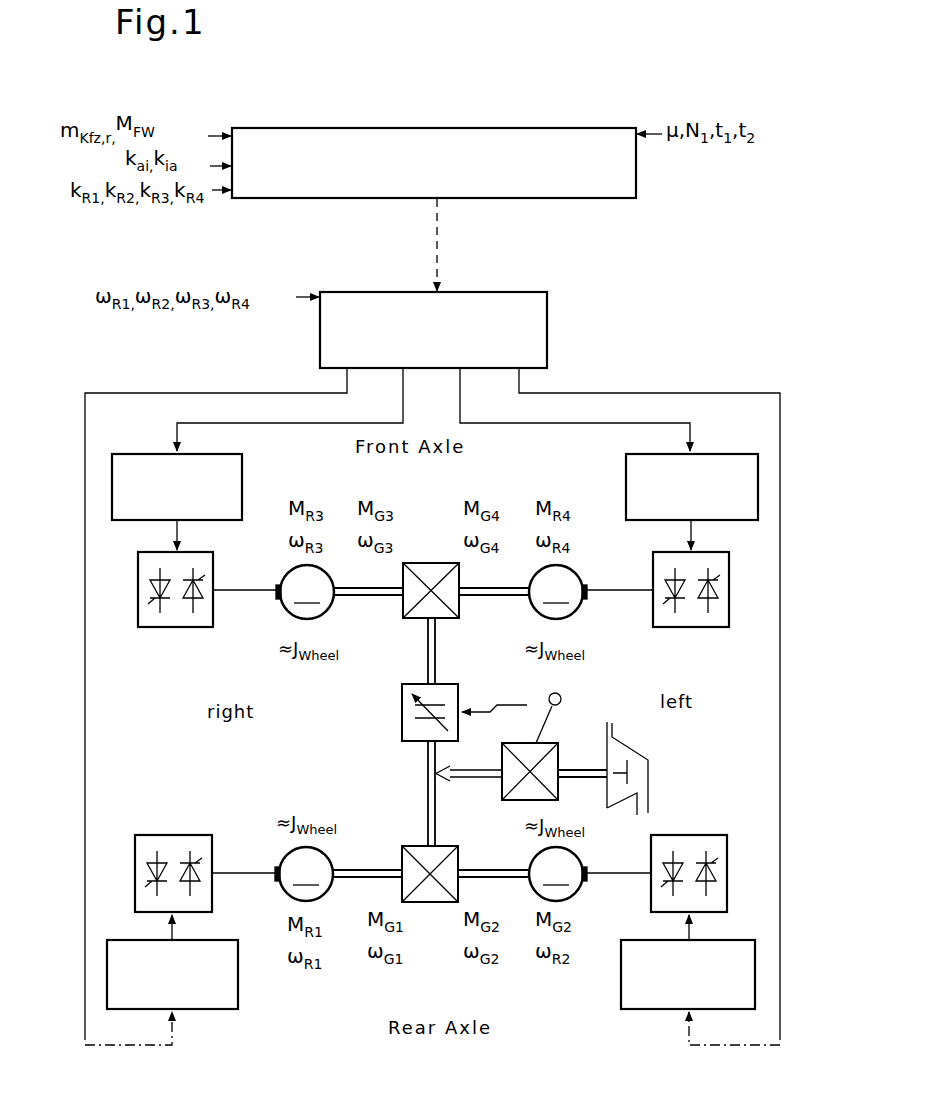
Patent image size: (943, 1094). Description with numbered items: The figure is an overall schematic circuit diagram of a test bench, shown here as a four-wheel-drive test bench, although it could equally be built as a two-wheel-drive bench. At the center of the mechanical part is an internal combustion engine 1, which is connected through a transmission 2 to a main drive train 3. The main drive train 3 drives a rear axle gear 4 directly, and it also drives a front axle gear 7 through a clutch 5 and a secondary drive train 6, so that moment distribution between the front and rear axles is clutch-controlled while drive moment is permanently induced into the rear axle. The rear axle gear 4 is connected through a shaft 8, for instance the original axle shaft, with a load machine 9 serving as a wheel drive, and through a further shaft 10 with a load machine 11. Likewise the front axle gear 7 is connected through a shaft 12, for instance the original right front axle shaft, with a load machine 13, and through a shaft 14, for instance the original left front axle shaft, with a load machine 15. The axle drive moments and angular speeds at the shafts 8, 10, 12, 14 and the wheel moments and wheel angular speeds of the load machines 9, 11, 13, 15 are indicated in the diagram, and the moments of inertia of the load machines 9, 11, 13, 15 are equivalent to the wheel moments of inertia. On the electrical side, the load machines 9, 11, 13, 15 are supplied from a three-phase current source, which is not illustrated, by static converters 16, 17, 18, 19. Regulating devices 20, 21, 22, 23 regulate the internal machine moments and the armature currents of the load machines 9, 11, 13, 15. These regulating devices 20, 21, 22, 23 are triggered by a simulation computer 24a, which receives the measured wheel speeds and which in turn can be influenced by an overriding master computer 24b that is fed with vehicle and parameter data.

The internal combustion engine 1 is at (648, 772).
The transmission 2 is at (536, 746).
The main drive train 3 is at (504, 779).
The rear axle gear 4 is at (430, 904).
The clutch 5 is at (448, 712).
The secondary drive train 6 is at (418, 732).
The front axle gear 7 is at (431, 576).
The shaft 8 is at (367, 861).
The load machine 9 is at (280, 886).
The shaft 10 is at (493, 860).
The load machine 11 is at (570, 870).
The shaft 12 is at (368, 579).
The load machine 13 is at (287, 596).
The shaft 14 is at (494, 579).
The load machine 15 is at (576, 591).
The static converter 16 is at (135, 873).
The static converter 17 is at (727, 873).
The static converter 18 is at (138, 582).
The static converter 19 is at (722, 592).
The regulating device 20 is at (218, 998).
The regulating device 21 is at (643, 990).
The regulating device 22 is at (218, 482).
The regulating device 23 is at (645, 478).
The simulation computer 24a is at (522, 330).
The master computer 24b is at (449, 128).